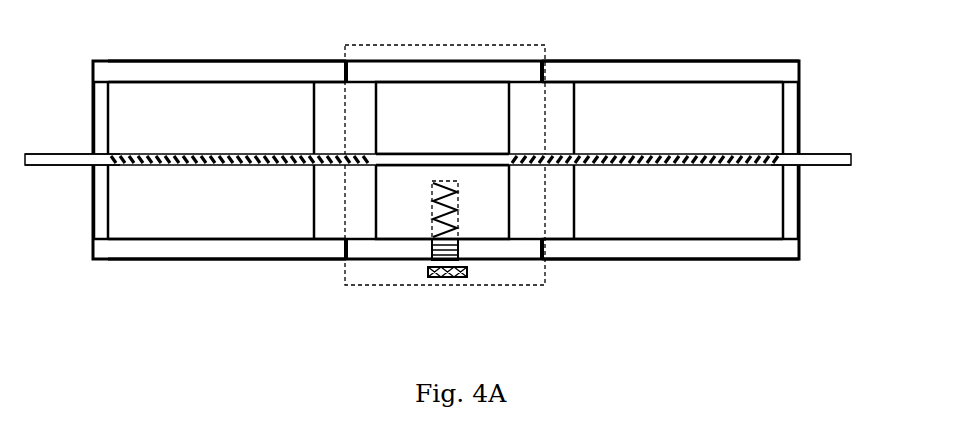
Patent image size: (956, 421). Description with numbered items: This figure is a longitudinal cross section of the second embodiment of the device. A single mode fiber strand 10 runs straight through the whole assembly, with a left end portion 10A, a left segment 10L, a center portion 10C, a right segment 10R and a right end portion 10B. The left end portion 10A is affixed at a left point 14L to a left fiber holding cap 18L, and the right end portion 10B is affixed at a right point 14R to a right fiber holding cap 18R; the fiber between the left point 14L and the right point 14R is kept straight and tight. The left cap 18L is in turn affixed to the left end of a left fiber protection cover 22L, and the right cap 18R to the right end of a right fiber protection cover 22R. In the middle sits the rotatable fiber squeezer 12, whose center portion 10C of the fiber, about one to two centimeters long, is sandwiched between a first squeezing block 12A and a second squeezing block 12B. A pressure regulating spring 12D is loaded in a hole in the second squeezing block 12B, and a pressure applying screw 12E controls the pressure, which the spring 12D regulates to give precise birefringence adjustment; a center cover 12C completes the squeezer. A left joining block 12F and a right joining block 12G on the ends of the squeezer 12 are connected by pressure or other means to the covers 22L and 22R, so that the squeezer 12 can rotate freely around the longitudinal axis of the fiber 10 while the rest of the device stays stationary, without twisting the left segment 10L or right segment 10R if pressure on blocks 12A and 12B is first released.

The single mode fiber strand 10 is at (847, 170).
The left end portion 10A is at (90, 153).
The right end portion 10B is at (802, 167).
The center portion 10C is at (407, 170).
The left segment 10L is at (223, 170).
The right segment 10R is at (658, 172).
The rotatable fiber squeezer 12 is at (418, 288).
The first squeezing block 12A is at (492, 107).
The second squeezing block 12B is at (500, 230).
The center cover 12C is at (370, 73).
The pressure regulating spring 12D is at (455, 190).
The pressure applying screw 12E is at (462, 265).
The left joining block 12F is at (327, 120).
The right joining block 12G is at (568, 123).
The left point 14L is at (113, 168).
The right point 14R is at (778, 170).
The left fiber holding cap 18L is at (92, 218).
The right fiber holding cap 18R is at (800, 107).
The left fiber protection cover 22L is at (155, 75).
The right fiber protection cover 22R is at (685, 75).